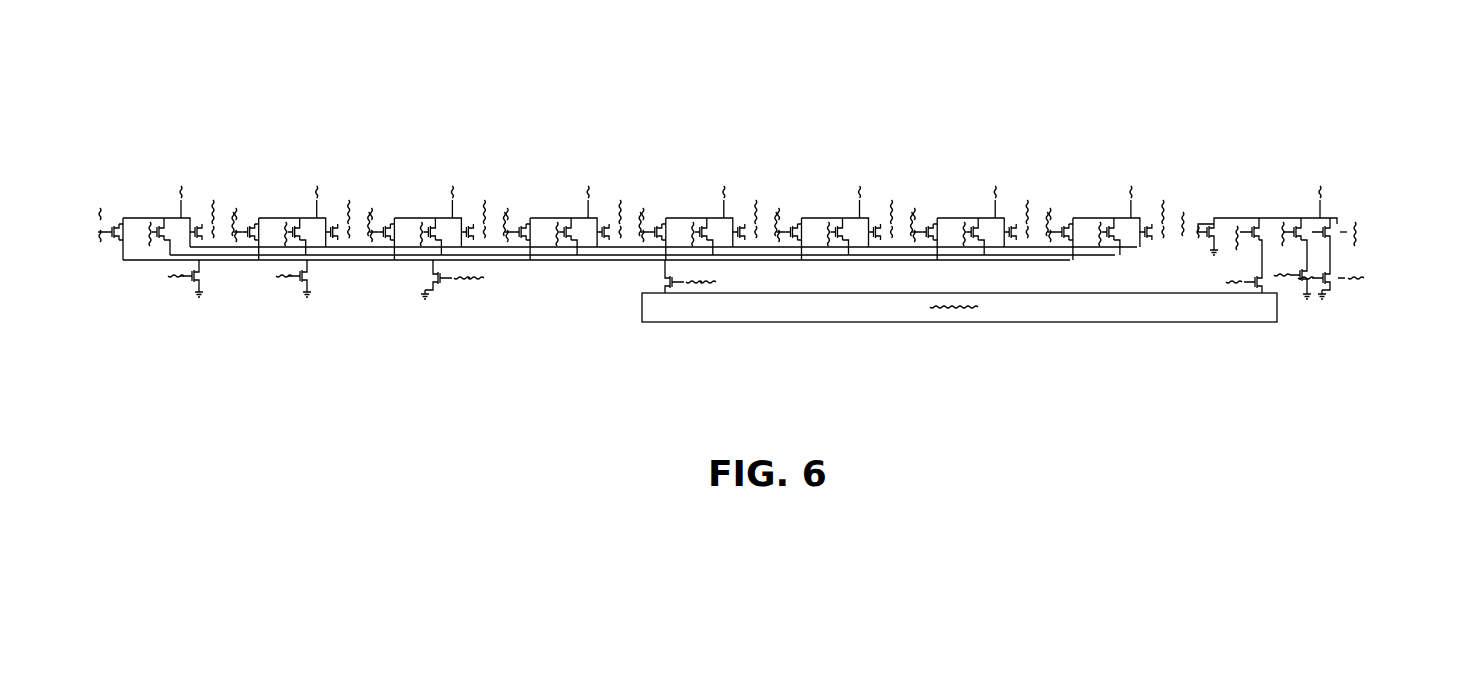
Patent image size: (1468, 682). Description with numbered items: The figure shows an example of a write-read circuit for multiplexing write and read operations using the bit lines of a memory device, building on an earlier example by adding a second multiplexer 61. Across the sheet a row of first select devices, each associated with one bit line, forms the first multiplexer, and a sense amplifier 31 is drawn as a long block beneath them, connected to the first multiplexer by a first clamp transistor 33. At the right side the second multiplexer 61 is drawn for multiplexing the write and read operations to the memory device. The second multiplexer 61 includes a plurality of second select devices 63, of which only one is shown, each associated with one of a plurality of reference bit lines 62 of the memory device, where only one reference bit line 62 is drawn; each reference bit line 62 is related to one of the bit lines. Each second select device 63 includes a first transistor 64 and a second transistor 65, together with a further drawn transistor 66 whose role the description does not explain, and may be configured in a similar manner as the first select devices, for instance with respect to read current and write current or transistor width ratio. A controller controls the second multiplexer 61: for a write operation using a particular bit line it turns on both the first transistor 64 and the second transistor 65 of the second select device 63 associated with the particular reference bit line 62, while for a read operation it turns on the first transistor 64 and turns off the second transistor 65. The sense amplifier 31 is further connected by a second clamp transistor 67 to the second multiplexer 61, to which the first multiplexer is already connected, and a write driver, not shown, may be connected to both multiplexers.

The sense amplifier 31 is at (858, 323).
The first clamp transistor 33 is at (662, 300).
The second multiplexer 61 is at (1306, 237).
The reference bit line 62 is at (1332, 212).
The second select device 63 is at (1280, 145).
The first transistor 64 is at (1231, 232).
The second transistor 65 is at (1293, 218).
The third transistor 66 is at (1339, 189).
The second clamp transistor 67 is at (1242, 300).